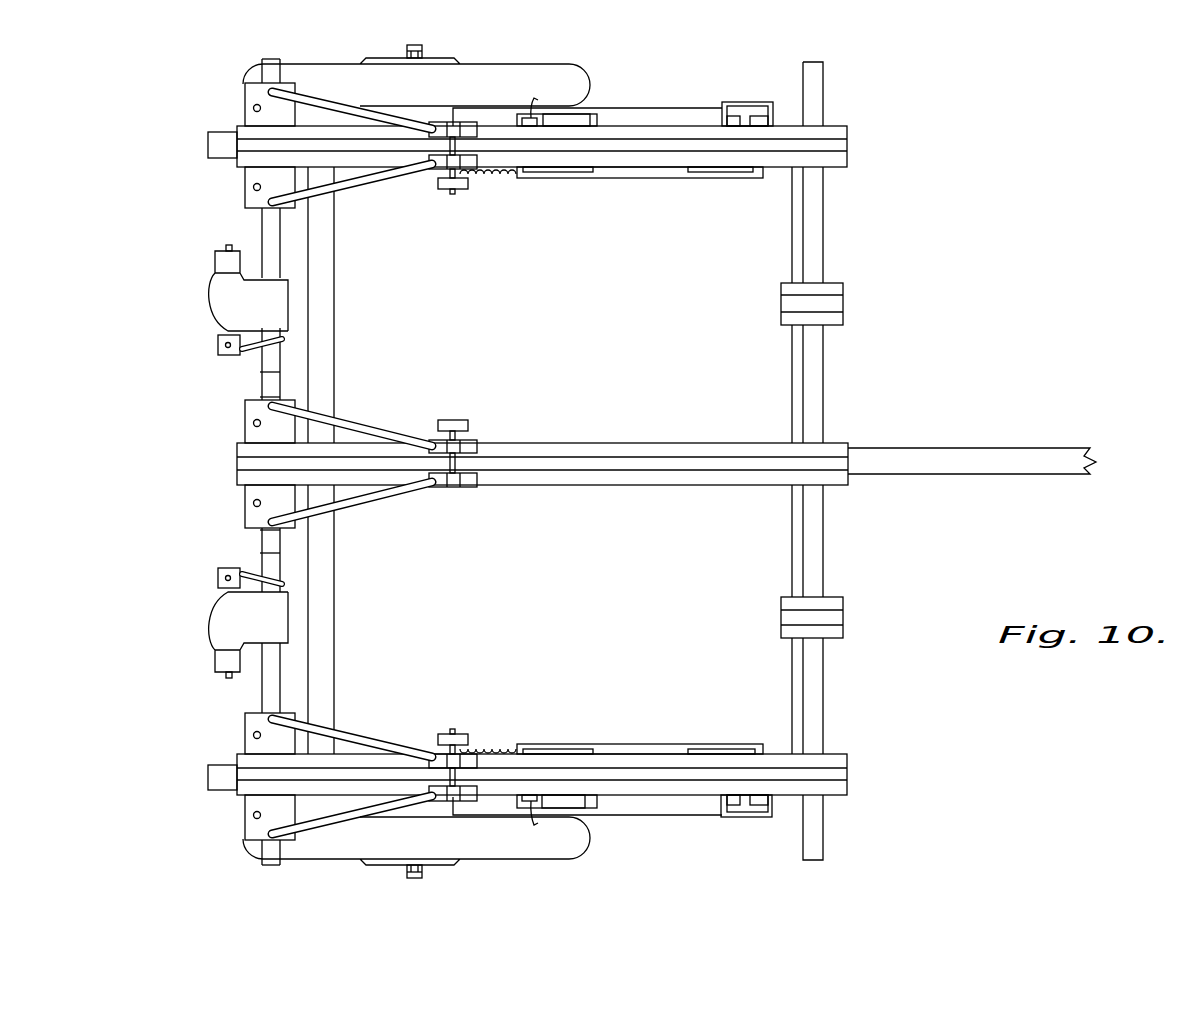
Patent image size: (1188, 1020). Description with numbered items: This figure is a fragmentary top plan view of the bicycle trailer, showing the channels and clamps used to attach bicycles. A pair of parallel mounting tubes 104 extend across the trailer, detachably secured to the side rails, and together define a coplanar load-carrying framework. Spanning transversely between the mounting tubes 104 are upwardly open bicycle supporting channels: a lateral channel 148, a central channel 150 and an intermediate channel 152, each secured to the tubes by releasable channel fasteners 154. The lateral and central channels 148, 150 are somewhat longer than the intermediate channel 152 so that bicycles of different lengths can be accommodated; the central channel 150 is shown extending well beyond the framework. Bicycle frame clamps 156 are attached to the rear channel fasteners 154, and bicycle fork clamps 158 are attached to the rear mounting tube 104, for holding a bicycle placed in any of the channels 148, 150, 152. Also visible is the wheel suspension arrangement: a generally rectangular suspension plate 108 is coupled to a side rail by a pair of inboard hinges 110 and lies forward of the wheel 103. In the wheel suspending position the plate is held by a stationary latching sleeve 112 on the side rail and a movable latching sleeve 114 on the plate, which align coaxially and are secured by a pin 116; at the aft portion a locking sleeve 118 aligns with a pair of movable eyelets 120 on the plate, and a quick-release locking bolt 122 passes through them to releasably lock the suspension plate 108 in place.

The wheel 103 is at (564, 84).
The mounting tube 104 is at (270, 73).
The suspension plate 108 is at (637, 745).
The inboard hinge 110 is at (540, 750).
The stationary latching sleeve 112 is at (752, 805).
The movable latching sleeve 114 is at (727, 808).
The pin 116 is at (769, 806).
The locking sleeve 118 is at (558, 812).
The movable eyelet 120 is at (542, 810).
The quick-release locking bolt 122 is at (531, 826).
The lateral bicycle supporting channel 148 is at (848, 151).
The central bicycle supporting channel 150 is at (842, 446).
The intermediate bicycle supporting channel 152 is at (837, 307).
The releasable channel fastener 154 is at (252, 195).
The bicycle frame clamp 156 is at (372, 182).
The bicycle fork clamp 158 is at (224, 315).